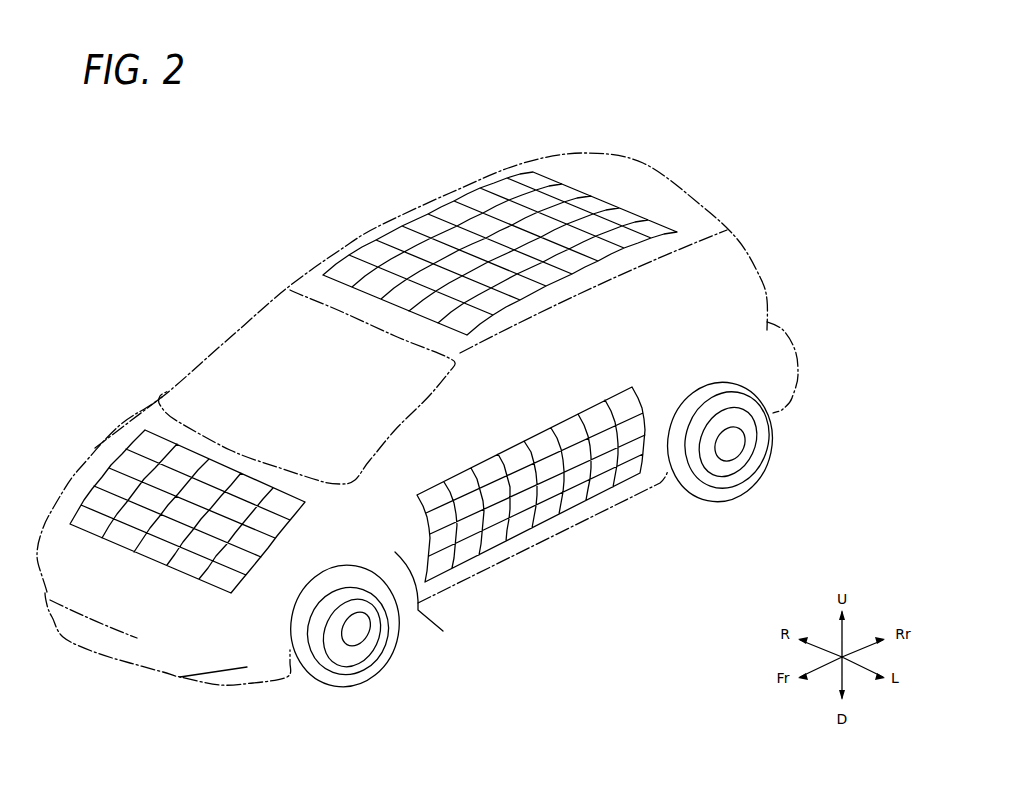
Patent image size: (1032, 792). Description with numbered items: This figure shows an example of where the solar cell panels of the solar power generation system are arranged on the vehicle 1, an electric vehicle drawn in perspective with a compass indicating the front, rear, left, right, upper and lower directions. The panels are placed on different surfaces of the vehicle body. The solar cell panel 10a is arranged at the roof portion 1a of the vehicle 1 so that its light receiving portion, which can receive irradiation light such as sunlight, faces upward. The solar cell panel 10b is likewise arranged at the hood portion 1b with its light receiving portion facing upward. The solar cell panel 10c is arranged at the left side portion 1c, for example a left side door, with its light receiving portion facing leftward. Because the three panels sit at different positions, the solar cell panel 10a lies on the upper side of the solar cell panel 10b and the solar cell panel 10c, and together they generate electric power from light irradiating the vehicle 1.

The vehicle 1 is at (258, 202).
The roof portion 1a is at (607, 186).
The hood portion 1b is at (155, 422).
The left side portion 1c is at (432, 597).
The solar cell panel 10a is at (487, 202).
The solar cell panel 10b is at (192, 563).
The solar cell panel 10c is at (557, 480).